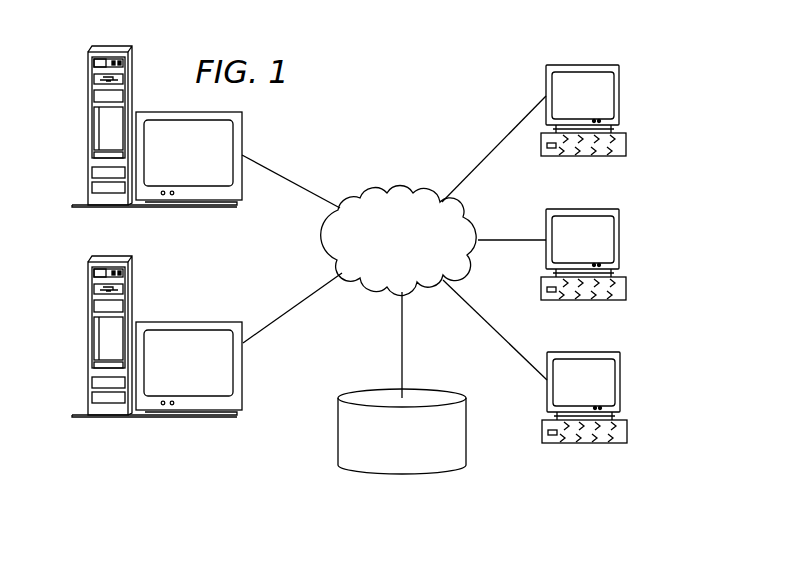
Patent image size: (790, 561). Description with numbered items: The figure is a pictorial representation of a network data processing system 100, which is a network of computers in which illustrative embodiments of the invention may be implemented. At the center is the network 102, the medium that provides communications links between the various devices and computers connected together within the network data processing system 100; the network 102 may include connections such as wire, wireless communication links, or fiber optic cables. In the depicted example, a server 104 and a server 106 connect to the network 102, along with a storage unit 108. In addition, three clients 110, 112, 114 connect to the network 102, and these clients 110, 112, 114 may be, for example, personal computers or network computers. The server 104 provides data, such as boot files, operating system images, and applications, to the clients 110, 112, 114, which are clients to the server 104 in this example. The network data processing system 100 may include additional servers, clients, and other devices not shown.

The network data processing system 100 is at (456, 73).
The network 102 is at (373, 190).
The server 104 is at (88, 130).
The server 106 is at (88, 340).
The storage unit 108 is at (387, 474).
The client 110 is at (619, 97).
The client 112 is at (619, 240).
The client 114 is at (620, 380).